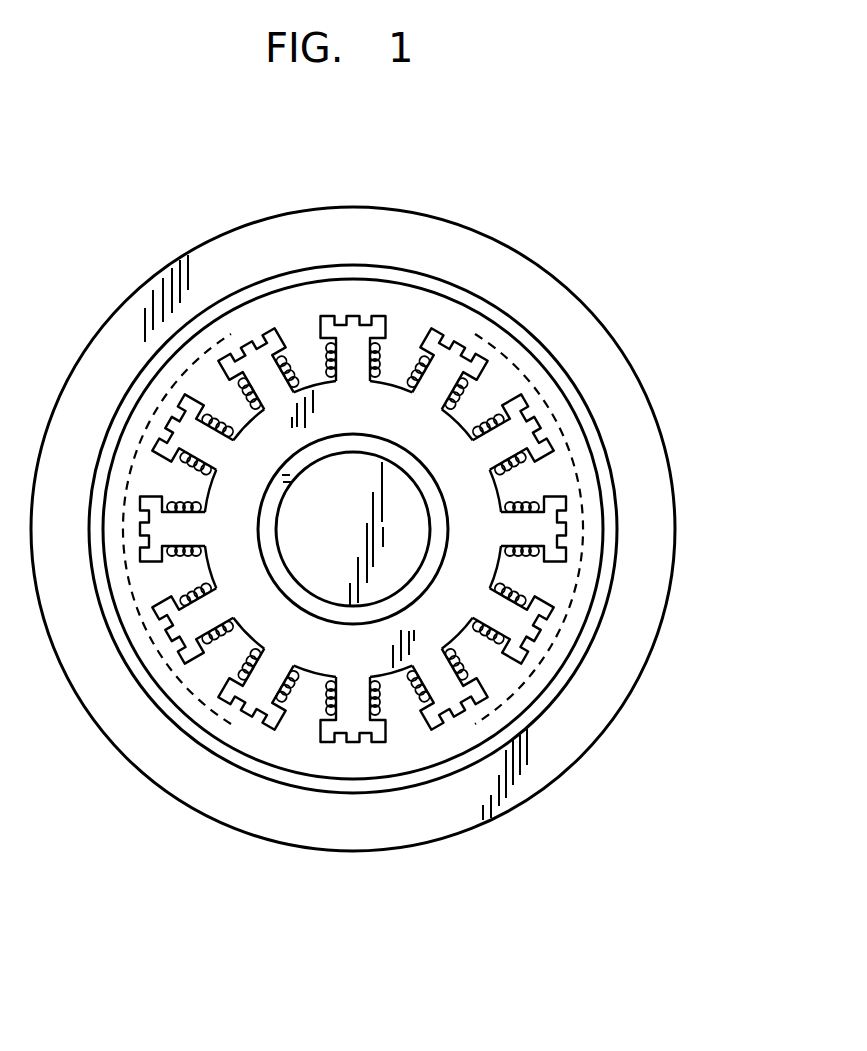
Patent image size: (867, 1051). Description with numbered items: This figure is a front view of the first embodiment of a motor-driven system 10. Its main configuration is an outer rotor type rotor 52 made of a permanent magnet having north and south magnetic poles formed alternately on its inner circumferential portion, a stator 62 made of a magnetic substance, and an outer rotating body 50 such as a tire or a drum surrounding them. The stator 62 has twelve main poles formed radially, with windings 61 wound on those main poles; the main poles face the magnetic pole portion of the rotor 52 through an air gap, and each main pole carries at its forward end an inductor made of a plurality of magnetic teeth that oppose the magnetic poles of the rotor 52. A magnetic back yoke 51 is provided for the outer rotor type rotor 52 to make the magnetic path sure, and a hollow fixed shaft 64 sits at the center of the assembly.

The motor-driven system 10 is at (493, 213).
The outer rotating body 50 is at (648, 485).
The magnetic back yoke 51 is at (615, 567).
The outer rotor type rotor 52 is at (427, 768).
The windings 61 is at (483, 363).
The stator 62 is at (465, 393).
The hollow fixed shaft 64 is at (414, 598).